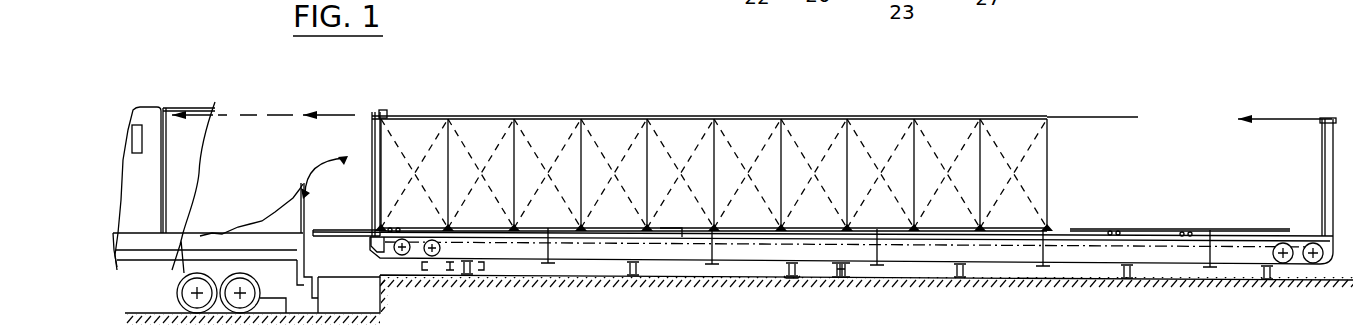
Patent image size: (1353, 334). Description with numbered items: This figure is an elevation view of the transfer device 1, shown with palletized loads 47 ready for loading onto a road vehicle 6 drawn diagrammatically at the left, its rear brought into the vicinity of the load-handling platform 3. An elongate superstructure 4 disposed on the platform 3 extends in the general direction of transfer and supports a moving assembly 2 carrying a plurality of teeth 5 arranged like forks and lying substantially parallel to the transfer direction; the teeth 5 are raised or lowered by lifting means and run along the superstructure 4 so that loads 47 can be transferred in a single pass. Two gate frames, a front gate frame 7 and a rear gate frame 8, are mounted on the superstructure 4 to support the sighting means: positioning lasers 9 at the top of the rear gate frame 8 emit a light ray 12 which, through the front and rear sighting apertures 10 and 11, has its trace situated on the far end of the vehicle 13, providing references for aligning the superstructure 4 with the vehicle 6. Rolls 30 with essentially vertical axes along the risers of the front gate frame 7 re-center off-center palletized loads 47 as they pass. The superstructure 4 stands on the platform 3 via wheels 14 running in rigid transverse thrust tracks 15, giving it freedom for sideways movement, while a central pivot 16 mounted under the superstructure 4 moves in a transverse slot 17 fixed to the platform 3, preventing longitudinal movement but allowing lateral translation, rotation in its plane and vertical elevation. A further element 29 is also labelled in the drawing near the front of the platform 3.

The transfer device 1 is at (1107, 220).
The moving assembly 2 is at (1157, 236).
The platform 3 is at (958, 280).
The elongate superstructure 4 is at (1168, 249).
The teeth 5 is at (1071, 231).
The vehicle 6 is at (147, 107).
The front gate frame 7 is at (366, 122).
The rear gate frame 8 is at (1327, 170).
The positioning laser 9 is at (1326, 126).
The front sighting aperture 10 is at (1330, 119).
The rear sighting aperture 11 is at (386, 113).
The light ray 12 is at (240, 115).
The far end of the vehicle 13 is at (166, 140).
The wheels 14 is at (788, 272).
The thrust tracks 15 is at (795, 277).
The central pivot 16 is at (841, 276).
The transverse slot 17 is at (848, 272).
The loading ramp 29 is at (328, 233).
The rolls 30 is at (372, 147).
The loads 47 is at (942, 126).